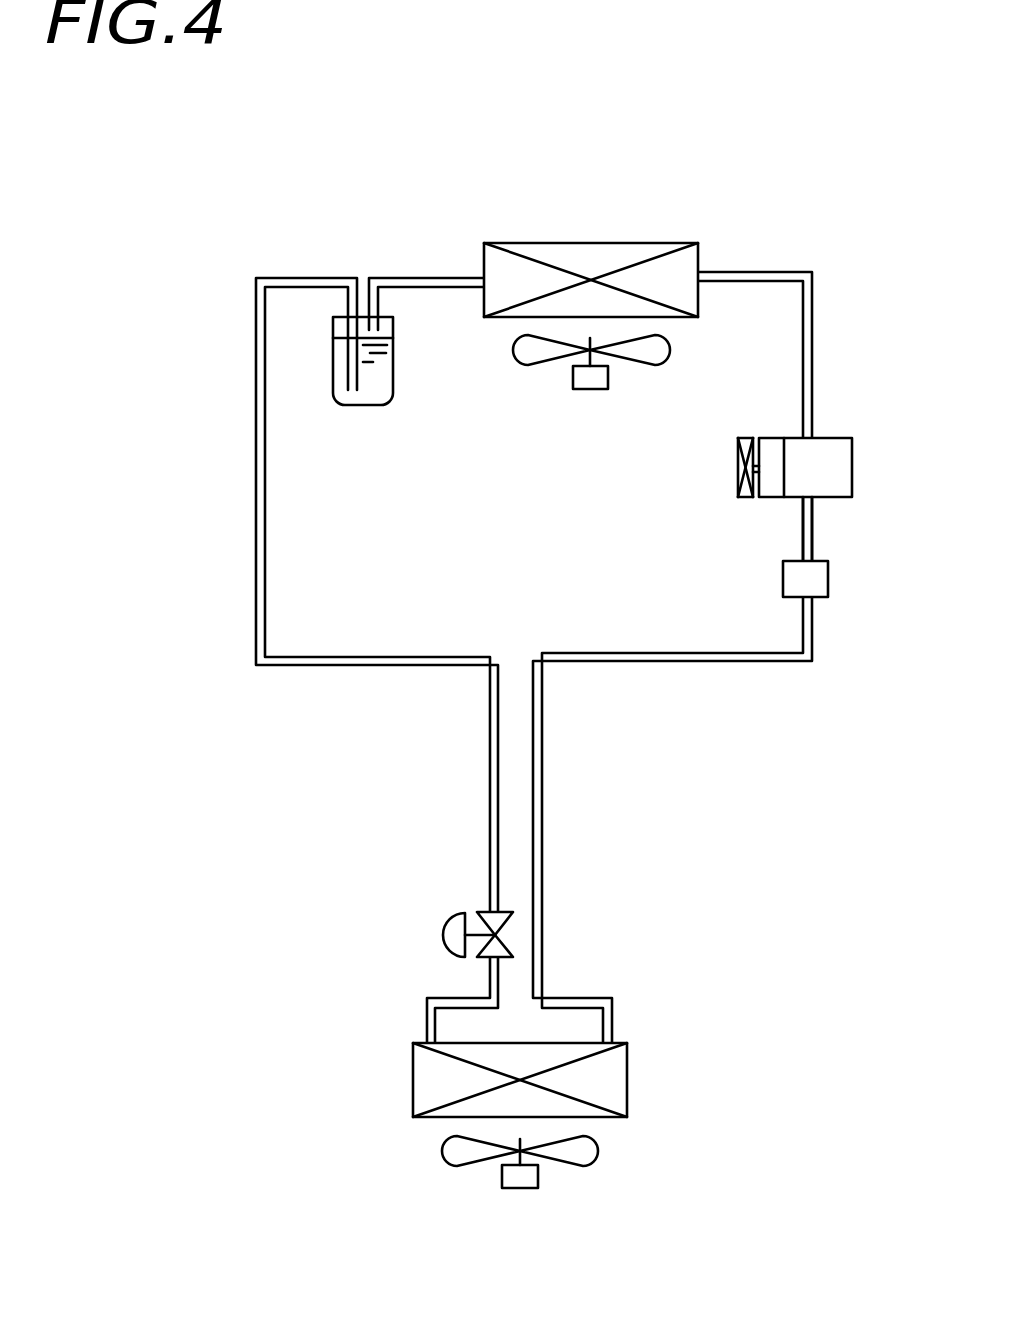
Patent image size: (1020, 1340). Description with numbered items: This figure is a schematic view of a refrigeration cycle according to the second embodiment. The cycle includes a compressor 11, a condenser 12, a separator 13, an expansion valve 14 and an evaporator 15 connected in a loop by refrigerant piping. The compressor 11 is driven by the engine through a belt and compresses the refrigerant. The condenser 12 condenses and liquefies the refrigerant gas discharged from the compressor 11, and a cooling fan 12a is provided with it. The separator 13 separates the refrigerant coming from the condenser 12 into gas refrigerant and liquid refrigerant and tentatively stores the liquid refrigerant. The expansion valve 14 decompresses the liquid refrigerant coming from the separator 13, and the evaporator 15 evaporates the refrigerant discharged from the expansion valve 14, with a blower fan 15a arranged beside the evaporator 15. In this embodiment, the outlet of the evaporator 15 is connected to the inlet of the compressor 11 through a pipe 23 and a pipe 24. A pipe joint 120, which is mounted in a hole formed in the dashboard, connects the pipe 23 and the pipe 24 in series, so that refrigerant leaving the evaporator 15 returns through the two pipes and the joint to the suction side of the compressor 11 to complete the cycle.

The compressor 11 is at (823, 465).
The condenser 12 is at (585, 265).
The cooling fan 12a is at (538, 353).
The separator 13 is at (348, 393).
The expansion valve 14 is at (493, 915).
The evaporator 15 is at (438, 1077).
The blower fan 15a is at (462, 1154).
The pipe 23 is at (755, 661).
The pipe 24 is at (812, 530).
The pipe joint 120 is at (812, 587).